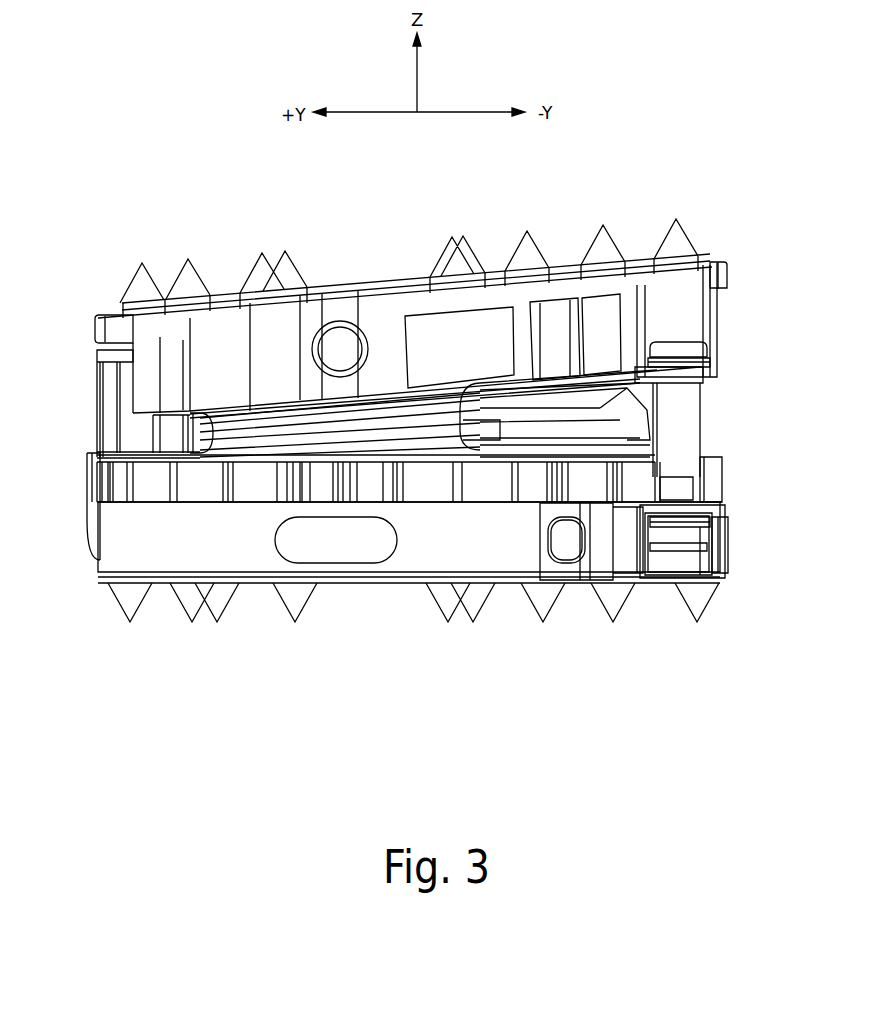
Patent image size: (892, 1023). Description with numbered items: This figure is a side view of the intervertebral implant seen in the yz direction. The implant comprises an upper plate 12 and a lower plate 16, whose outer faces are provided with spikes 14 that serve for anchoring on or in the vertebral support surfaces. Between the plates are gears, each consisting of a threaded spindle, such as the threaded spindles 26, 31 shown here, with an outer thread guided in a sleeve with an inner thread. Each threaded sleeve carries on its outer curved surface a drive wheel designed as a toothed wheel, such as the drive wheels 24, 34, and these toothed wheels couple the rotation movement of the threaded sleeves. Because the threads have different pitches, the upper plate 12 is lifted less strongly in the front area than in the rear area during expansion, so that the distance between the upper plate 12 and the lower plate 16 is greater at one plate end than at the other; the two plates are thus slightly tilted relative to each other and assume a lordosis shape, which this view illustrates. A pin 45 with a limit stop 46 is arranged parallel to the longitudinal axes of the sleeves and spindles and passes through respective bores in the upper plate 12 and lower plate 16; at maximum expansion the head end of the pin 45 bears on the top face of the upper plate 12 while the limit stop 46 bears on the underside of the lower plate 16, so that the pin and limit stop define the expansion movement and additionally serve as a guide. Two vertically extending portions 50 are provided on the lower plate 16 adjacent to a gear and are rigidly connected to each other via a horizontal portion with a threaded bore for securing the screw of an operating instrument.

The upper plate 12 is at (430, 332).
The threaded spindle 26 is at (282, 417).
The vertically extending portion 50 is at (100, 417).
The threaded spindle 31 is at (672, 397).
The pin 45 is at (675, 431).
The drive wheel 24 is at (258, 485).
The lower plate 16 is at (492, 550).
The spikes 14 is at (618, 597).
The drive wheel 34 is at (587, 482).
The limit stop 46 is at (688, 531).